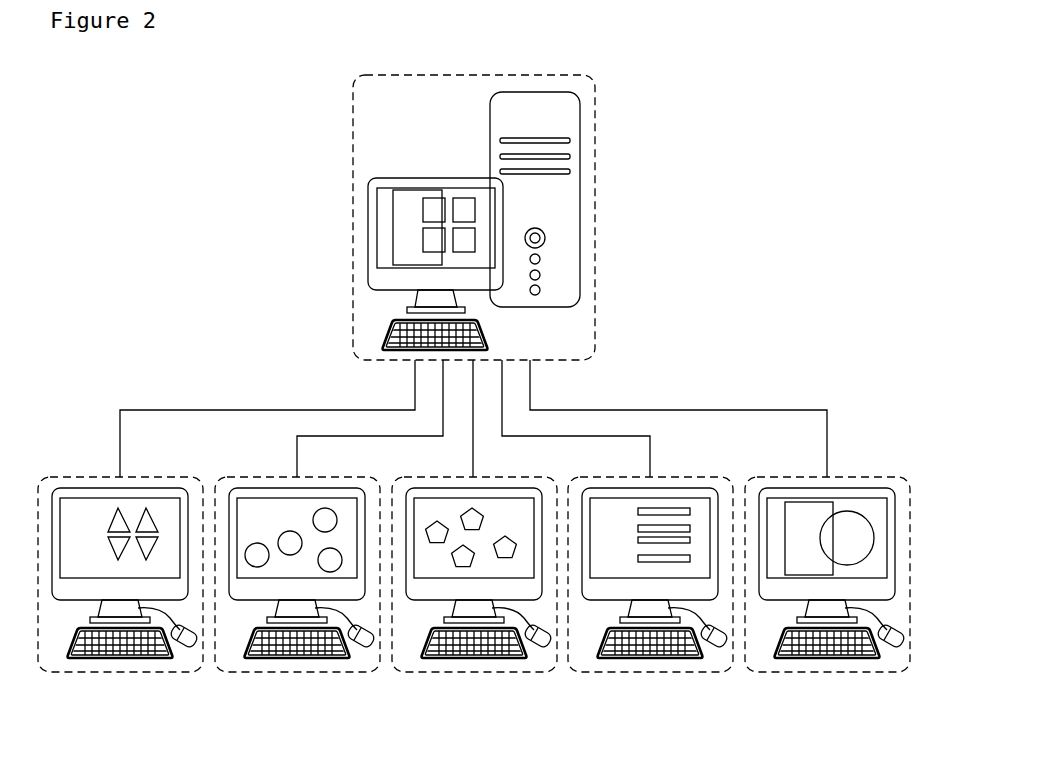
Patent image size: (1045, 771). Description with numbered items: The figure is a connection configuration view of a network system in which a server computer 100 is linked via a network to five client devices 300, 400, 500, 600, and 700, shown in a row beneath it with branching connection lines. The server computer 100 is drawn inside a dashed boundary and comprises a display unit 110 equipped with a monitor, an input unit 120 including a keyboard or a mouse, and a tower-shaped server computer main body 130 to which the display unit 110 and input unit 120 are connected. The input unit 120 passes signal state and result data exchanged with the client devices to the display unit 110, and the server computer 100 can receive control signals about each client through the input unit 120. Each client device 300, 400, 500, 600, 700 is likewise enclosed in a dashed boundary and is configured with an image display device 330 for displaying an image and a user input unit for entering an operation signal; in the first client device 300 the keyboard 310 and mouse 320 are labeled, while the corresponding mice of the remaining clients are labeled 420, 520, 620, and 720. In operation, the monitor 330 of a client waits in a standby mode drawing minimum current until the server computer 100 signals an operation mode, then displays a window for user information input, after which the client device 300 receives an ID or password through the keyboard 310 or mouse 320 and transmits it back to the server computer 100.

The server computer 100 is at (478, 217).
The display unit 110 is at (368, 233).
The input unit 120 is at (385, 333).
The server computer main body 130 is at (580, 168).
The client device 300 is at (126, 585).
The keyboard 310 is at (85, 660).
The mouse 320 is at (185, 648).
The image display device 330 is at (97, 488).
The client device 400 is at (304, 608).
The mouse 420 is at (362, 648).
The client device 500 is at (481, 608).
The mouse 520 is at (539, 648).
The client device 600 is at (657, 608).
The mouse 620 is at (715, 648).
The client device 700 is at (834, 608).
The mouse 720 is at (892, 648).